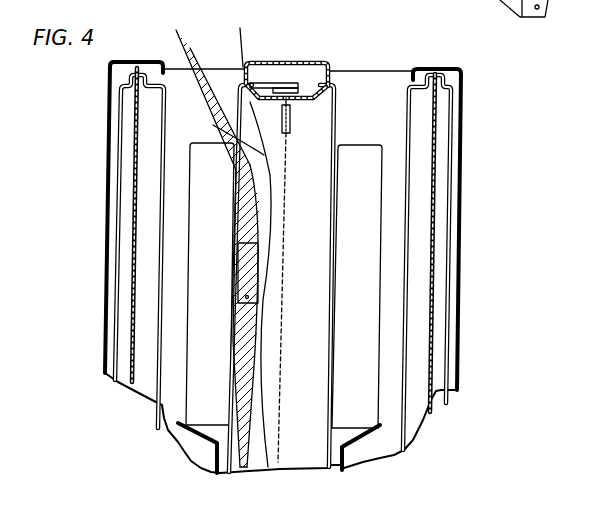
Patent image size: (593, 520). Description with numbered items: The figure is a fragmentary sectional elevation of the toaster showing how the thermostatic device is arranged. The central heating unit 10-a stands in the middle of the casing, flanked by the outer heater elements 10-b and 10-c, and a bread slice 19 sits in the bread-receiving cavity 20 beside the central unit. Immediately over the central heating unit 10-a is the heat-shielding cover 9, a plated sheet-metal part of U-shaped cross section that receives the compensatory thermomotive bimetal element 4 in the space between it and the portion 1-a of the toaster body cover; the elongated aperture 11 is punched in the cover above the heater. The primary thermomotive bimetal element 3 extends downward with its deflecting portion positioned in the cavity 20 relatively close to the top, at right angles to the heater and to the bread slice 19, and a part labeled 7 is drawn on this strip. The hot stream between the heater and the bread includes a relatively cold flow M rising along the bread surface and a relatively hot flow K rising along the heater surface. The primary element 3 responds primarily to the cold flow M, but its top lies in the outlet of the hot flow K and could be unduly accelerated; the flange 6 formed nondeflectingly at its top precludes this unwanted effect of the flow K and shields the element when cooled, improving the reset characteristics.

The toaster body cover portion 1-a is at (287, 62).
The primary thermomotive bimetal element 3 is at (247, 212).
The compensatory thermomotive bimetal element 4 is at (300, 86).
The flange 6 is at (244, 151).
The connector block 7 is at (250, 270).
The heat-shielding cover 9 is at (327, 97).
The central heating unit 10-a is at (285, 157).
The heater element 10-b is at (438, 128).
The heater element 10-c is at (138, 173).
The elongated aperture 11 is at (290, 108).
The bread slice 19 is at (207, 156).
The bread-receiving cavity 20 is at (178, 88).
The relatively hot flow K is at (268, 468).
The relatively cold flow M is at (243, 468).